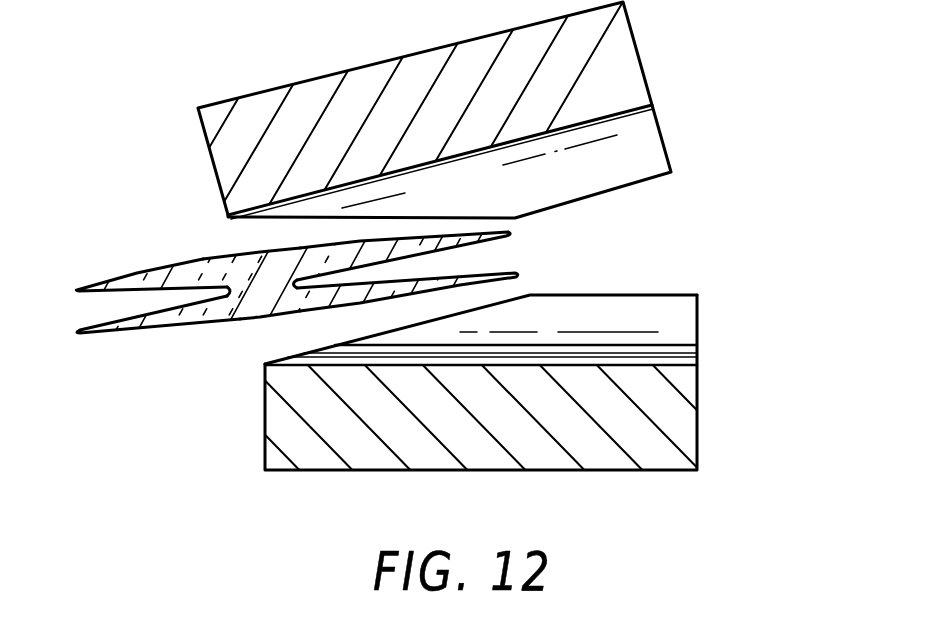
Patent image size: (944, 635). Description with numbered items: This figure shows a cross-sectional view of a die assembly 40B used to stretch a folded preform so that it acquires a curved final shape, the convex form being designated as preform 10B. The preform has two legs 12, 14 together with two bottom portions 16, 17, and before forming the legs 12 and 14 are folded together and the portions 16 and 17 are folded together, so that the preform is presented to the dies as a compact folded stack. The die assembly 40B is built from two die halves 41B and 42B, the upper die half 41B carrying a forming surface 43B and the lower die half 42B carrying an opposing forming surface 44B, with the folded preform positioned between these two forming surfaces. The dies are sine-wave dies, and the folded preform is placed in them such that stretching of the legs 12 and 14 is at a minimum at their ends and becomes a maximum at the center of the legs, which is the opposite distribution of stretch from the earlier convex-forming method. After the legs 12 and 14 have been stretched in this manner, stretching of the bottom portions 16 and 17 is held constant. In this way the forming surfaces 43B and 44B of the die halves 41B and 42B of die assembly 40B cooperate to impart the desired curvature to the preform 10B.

The preform 10B is at (328, 326).
The leg 12 is at (510, 232).
The leg 14 is at (517, 273).
The portion 16 is at (80, 289).
The portion 17 is at (88, 336).
The die assembly 40B is at (451, 175).
The die half 41B is at (640, 53).
The forming surface 43B is at (651, 184).
The die half 42B is at (697, 403).
The forming surface 44B is at (670, 294).